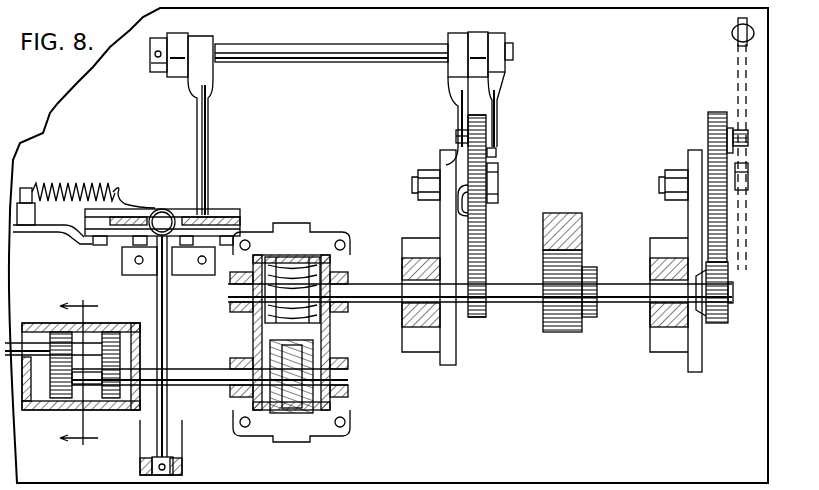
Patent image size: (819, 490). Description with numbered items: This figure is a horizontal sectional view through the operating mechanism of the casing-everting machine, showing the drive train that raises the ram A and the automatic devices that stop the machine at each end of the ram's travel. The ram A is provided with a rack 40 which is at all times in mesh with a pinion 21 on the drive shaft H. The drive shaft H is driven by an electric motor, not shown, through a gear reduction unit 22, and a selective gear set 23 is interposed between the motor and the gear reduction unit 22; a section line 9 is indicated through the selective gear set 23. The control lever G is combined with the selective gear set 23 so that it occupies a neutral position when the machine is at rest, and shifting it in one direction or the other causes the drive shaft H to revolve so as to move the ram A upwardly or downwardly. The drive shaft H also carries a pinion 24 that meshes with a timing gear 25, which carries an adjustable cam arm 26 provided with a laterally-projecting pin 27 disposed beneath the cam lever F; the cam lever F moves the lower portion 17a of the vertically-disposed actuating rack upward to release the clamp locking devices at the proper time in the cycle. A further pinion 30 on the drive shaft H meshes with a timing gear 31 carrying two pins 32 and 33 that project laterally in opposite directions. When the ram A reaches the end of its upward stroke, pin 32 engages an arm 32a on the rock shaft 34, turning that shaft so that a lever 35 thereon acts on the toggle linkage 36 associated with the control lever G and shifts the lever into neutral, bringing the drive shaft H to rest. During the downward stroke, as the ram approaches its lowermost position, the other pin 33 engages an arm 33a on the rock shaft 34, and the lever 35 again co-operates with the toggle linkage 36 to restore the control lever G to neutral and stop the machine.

The section line 9- 9 is at (79, 373).
The bottom portion of actuating rack 17a is at (732, 26).
The pinion 21 is at (567, 263).
The gear reduction unit 22 is at (348, 341).
The selective gear set 23 is at (114, 319).
The pinion 24 is at (716, 323).
The timing gear 25 is at (725, 238).
The cam arm 26 is at (730, 156).
The laterally-projecting pin 27 is at (743, 131).
The pinion 30 is at (477, 317).
The timing gear 31 is at (473, 210).
The pin 32 is at (456, 135).
The arm 32a is at (458, 110).
The pin 33 is at (496, 152).
The arm 33a is at (496, 103).
The rock shaft 34 is at (293, 50).
The lever 35 is at (200, 150).
The toggle linkage 36 is at (223, 212).
The rack 40 is at (545, 252).
The ram A is at (560, 254).
The cam operated lever F is at (737, 90).
The control lever G is at (165, 210).
The drive shaft H is at (513, 296).